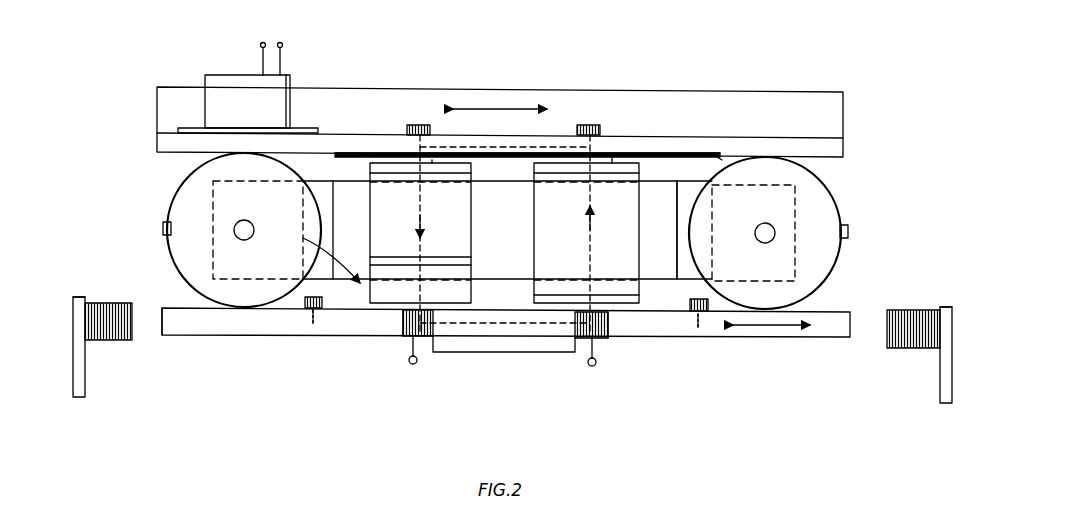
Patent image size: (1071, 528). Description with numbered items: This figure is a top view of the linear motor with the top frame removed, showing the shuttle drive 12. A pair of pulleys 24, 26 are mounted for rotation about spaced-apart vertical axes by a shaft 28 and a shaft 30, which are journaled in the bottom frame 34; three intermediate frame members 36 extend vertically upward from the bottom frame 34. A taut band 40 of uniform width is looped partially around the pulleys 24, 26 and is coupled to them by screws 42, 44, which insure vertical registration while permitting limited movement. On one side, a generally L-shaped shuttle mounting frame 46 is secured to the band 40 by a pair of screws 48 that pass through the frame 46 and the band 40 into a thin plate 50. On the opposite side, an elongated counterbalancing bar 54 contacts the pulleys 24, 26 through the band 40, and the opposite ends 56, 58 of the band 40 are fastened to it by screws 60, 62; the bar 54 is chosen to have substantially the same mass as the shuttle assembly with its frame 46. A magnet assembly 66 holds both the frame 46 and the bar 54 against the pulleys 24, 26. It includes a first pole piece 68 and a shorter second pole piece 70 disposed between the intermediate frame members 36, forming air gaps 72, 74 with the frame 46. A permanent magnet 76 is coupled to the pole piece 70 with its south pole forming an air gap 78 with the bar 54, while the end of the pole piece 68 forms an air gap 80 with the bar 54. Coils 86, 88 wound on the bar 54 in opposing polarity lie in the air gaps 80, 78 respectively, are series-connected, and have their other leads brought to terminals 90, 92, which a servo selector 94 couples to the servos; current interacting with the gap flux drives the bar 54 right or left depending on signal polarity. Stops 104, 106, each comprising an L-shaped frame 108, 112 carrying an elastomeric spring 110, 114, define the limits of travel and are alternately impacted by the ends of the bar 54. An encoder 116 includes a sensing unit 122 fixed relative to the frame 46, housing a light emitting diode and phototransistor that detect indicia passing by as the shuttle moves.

The shuttle drive 12 is at (232, 343).
The pulley 24 is at (820, 257).
The pulley 26 is at (182, 194).
The shaft 28 is at (772, 228).
The shaft 30 is at (234, 229).
The bottom frame 34 is at (660, 290).
The intermediate frame members 36 is at (358, 238).
The band 40 is at (714, 158).
The screw 42 is at (850, 230).
The screw 44 is at (162, 228).
The shuttle mounting frame 46 is at (805, 100).
The screws 48 is at (415, 125).
The plate 50 is at (352, 163).
The counterbalancing bar 54 is at (812, 332).
The end of band 56 is at (688, 303).
The end of band 58 is at (300, 305).
The screw 60 is at (708, 300).
The screw 62 is at (322, 300).
The magnet assembly 66 is at (655, 178).
The first pole piece 68 is at (540, 260).
The second pole piece 70 is at (372, 190).
The air gap 72 is at (612, 160).
The air gap 74 is at (432, 162).
The permanent magnet 76 is at (466, 306).
The air gap 78 is at (393, 306).
The air gap 80 is at (632, 306).
The coil 86 is at (577, 344).
The coil 88 is at (432, 340).
The terminal 90 is at (590, 366).
The terminal 92 is at (412, 364).
The servo selector 94 is at (314, 253).
The stop 104 is at (938, 382).
The stop 106 is at (87, 365).
The L-shaped frame 108 is at (945, 306).
The spring 110 is at (900, 350).
The L-shaped frame 112 is at (80, 296).
The spring 114 is at (130, 340).
The encoder 116 is at (200, 72).
The sensing unit 122 is at (237, 85).